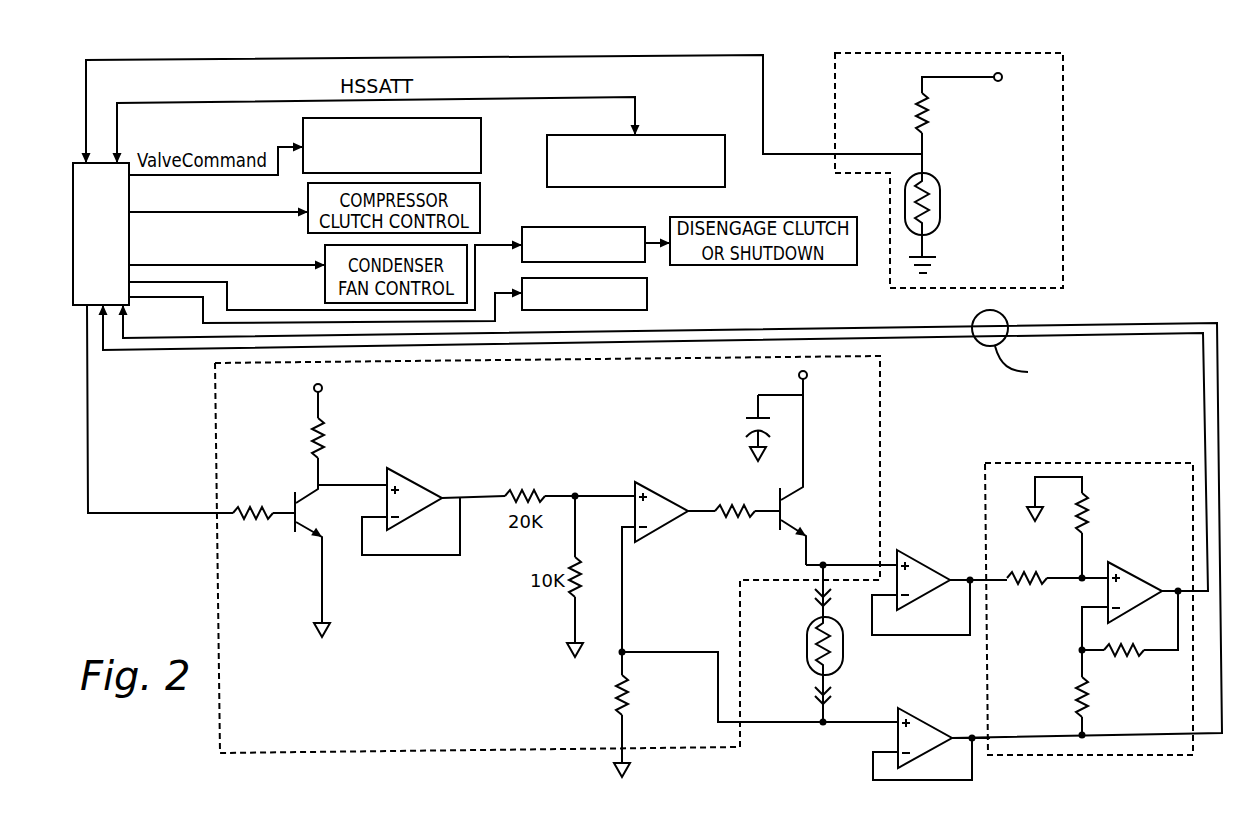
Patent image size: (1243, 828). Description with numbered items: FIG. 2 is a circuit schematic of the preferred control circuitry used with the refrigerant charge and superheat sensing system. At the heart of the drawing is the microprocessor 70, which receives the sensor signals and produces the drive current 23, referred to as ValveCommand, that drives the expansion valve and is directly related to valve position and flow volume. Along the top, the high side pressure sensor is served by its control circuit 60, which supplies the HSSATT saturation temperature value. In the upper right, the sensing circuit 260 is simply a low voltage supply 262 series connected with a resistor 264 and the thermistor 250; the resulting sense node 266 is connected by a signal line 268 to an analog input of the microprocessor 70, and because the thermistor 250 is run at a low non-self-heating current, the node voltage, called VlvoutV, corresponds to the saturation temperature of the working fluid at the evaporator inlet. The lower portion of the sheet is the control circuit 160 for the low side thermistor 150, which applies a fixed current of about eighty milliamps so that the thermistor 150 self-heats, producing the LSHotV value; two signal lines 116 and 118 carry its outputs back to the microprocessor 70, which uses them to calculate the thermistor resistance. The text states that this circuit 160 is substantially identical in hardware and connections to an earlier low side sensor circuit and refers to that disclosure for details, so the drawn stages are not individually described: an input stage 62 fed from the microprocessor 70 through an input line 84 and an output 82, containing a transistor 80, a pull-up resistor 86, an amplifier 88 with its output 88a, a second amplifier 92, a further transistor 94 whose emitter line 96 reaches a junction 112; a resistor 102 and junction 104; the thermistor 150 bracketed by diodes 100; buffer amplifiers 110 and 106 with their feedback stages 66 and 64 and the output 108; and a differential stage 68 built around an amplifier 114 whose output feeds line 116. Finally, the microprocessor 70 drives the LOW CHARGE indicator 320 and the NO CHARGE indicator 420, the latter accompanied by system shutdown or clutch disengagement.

The drive current 23 is at (492, 136).
The control circuit 60 is at (660, 135).
The input transistor stage 62 is at (212, 580).
The buffer amplifier stage 64 is at (905, 785).
The buffer amplifier stage 66 is at (930, 640).
The differential amplifier stage 68 is at (1123, 761).
The microprocessor 70 is at (132, 258).
The transistor 80 is at (293, 500).
The microprocessor output 82 is at (79, 311).
The input line 84 is at (89, 432).
The pull-up resistor 86 is at (313, 482).
The operational amplifier 88 is at (419, 562).
The amplifier output 88a is at (452, 497).
The operational amplifier 92 is at (667, 487).
The transistor 94 is at (777, 497).
The emitter output line 96 is at (796, 521).
The diode 100 is at (815, 598).
The resistor 102 is at (636, 705).
The junction node 104 is at (823, 726).
The operational amplifier 106 is at (936, 720).
The amplifier output 108 is at (972, 739).
The operational amplifier 110 is at (932, 552).
The junction node 112 is at (823, 564).
The operational amplifier 114 is at (1175, 590).
The signal line 116 is at (1203, 390).
The signal line 118 is at (1220, 420).
The thermistor 150 is at (806, 664).
The control circuit 160 is at (1090, 305).
The thermistor 250 is at (940, 200).
The sensing circuit 260 is at (1067, 177).
The low voltage supply 262 is at (998, 82).
The resistor 264 is at (930, 118).
The sense node 266 is at (928, 152).
The signal line 268 is at (620, 55).
The LOW CHARGE indicator 320 is at (647, 293).
The NO CHARGE indicator 420 is at (550, 227).